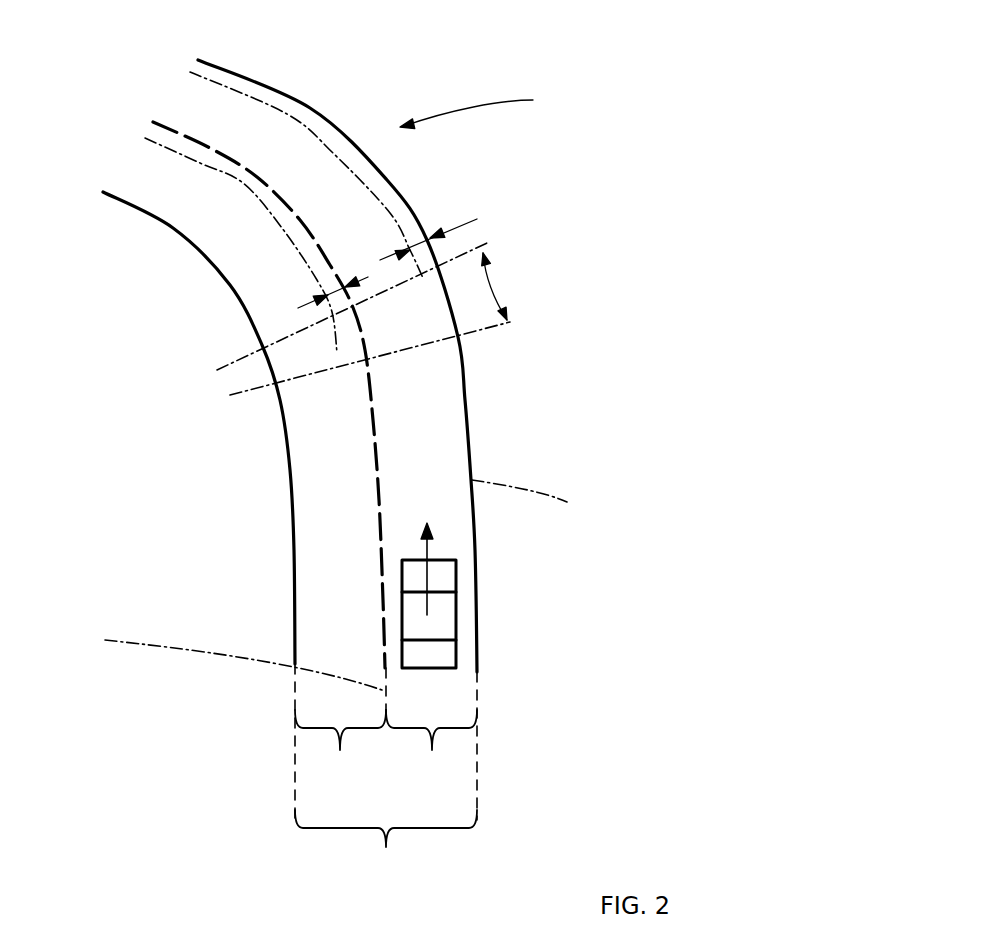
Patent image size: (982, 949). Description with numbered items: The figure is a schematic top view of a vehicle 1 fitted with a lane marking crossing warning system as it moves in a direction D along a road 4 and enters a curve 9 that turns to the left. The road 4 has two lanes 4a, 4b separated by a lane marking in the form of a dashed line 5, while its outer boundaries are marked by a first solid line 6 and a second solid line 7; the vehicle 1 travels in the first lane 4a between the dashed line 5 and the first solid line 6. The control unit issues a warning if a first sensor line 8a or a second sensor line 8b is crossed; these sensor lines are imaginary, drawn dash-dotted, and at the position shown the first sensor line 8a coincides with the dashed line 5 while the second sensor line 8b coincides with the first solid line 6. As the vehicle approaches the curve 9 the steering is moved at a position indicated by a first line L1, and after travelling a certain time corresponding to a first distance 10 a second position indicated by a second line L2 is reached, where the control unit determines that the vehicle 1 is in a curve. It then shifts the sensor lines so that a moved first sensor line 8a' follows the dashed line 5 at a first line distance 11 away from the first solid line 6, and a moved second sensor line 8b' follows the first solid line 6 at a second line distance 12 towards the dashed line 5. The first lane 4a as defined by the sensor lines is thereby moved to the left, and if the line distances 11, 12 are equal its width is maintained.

The vehicle 1 is at (448, 615).
The road 4 is at (386, 848).
The first lane 4a is at (431, 748).
The second lane 4b is at (340, 748).
The dashed line 5 is at (300, 214).
The first solid line 6 is at (463, 395).
The second solid line 7 is at (293, 592).
The first sensor line 8a is at (224, 659).
The second sensor line 8b is at (541, 501).
The moved first sensor line 8a' is at (206, 245).
The moved second sensor line 8b' is at (379, 155).
The curve 9 is at (477, 110).
The first distance 10 is at (510, 286).
The first line distance 11 is at (298, 308).
The second line distance 12 is at (477, 219).
The first line L1 is at (458, 337).
The second line L2 is at (237, 353).
The direction D is at (428, 545).